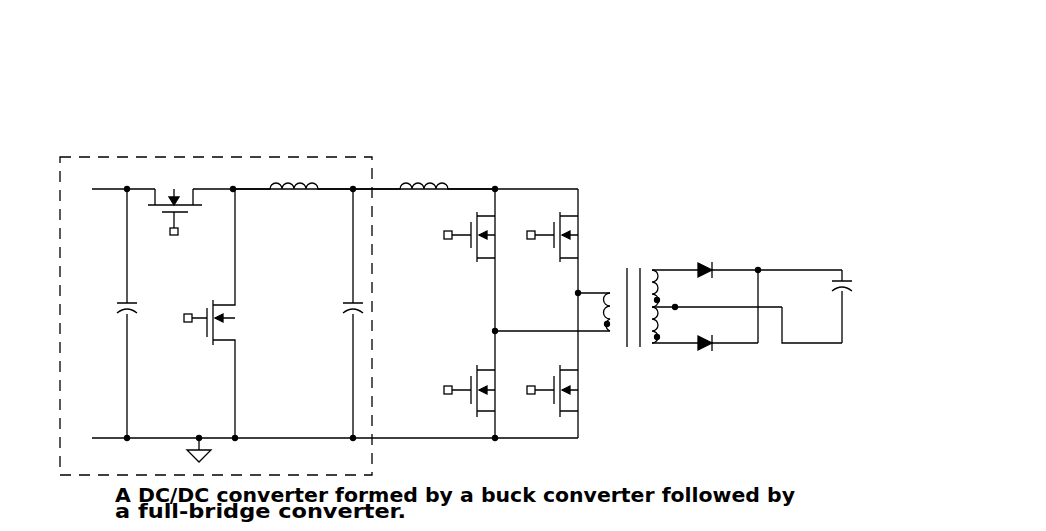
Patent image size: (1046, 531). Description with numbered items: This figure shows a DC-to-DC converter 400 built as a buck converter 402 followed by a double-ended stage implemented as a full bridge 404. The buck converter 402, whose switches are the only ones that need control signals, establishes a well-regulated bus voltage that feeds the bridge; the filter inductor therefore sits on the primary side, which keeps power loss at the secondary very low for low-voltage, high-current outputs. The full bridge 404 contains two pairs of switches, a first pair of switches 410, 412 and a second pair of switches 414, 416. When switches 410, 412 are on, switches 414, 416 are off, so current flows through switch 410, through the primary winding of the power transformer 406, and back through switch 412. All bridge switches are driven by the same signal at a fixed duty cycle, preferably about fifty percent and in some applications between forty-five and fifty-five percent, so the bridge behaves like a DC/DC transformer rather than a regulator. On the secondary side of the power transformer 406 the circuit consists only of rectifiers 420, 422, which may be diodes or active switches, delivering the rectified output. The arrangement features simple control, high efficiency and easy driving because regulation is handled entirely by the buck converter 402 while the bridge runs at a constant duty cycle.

The DC-to-DC converter 400 is at (392, 86).
The buck converter 402 is at (185, 155).
The full bridge 404 is at (565, 148).
The power transformer 406 is at (637, 230).
The switch 410 is at (465, 275).
The switch 412 is at (548, 415).
The switch 414 is at (542, 279).
The switch 416 is at (462, 418).
The rectifier 420 is at (712, 240).
The rectifier 422 is at (708, 368).